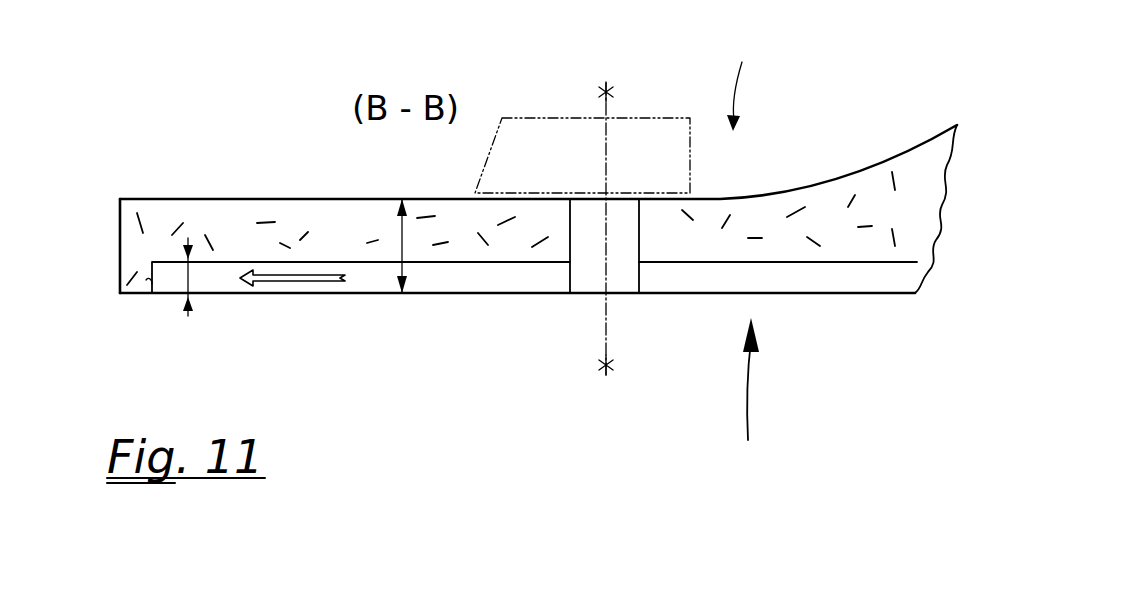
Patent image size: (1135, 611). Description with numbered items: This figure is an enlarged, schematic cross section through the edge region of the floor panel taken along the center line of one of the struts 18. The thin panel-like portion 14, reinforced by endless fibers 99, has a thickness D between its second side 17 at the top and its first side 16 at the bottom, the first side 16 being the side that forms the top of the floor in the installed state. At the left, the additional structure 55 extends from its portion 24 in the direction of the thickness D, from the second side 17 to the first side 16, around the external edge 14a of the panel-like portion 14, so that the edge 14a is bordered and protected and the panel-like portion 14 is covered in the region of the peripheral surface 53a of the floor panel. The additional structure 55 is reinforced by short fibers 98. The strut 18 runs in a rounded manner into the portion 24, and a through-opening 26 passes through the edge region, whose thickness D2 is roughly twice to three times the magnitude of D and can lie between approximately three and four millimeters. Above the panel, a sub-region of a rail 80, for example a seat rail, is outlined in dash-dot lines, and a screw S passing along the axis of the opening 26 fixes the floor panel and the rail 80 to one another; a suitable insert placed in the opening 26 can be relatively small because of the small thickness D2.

The panel-like portion 14 is at (472, 282).
The external edge 14a is at (146, 280).
The first side 16 is at (768, 402).
The second side 17 is at (755, 73).
The strut 18 is at (927, 148).
The portion 24 is at (527, 212).
The through-opening 26 is at (570, 282).
The peripheral surface 53a is at (104, 253).
The additional structure 55 is at (225, 212).
The rail 80 is at (647, 118).
The short fibers 98 is at (350, 228).
The endless fibers 99 is at (303, 293).
The thickness D is at (188, 312).
The thickness D2 is at (402, 245).
The screw S is at (607, 170).